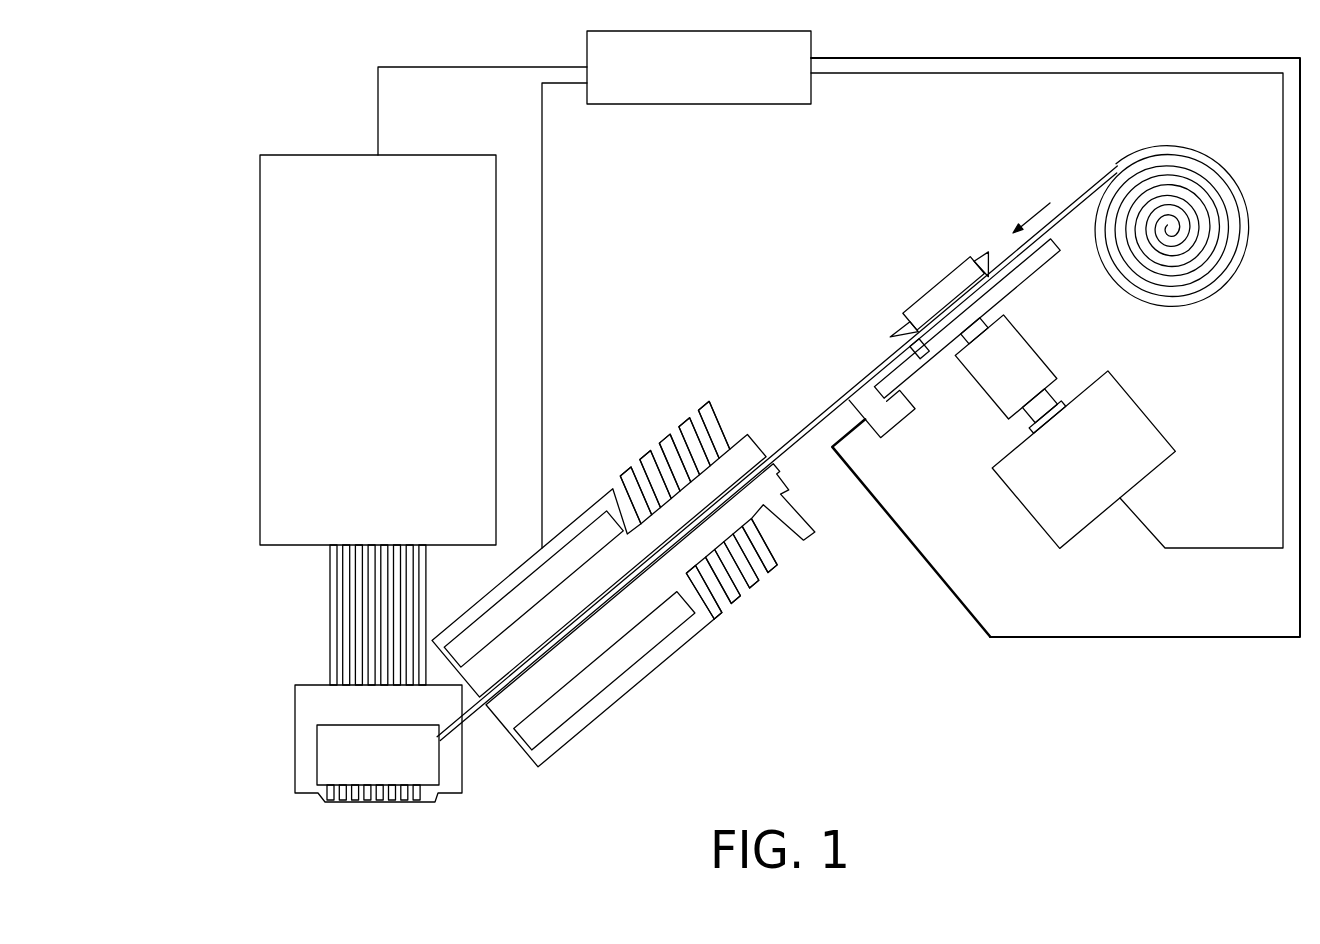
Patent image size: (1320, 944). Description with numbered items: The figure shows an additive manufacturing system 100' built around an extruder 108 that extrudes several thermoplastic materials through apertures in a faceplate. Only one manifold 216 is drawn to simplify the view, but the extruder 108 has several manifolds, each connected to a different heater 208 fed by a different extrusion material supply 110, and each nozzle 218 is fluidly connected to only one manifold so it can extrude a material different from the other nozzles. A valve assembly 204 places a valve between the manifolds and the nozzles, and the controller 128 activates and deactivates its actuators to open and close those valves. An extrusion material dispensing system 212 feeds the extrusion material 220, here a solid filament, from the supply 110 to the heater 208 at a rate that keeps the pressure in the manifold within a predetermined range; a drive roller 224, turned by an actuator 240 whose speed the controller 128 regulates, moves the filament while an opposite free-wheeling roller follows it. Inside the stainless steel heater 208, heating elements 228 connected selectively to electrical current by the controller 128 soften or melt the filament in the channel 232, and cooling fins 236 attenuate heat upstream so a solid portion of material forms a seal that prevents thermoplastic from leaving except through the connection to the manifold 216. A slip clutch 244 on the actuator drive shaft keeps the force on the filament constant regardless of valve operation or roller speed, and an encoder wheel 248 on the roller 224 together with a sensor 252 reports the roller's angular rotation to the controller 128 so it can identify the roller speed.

The additive manufacturing system 100' is at (149, 62).
The extruder 108 is at (290, 675).
The extrusion material supply 110 is at (1230, 167).
The controller 128 is at (697, 104).
The valve assembly 204 is at (325, 153).
The heater 208 is at (653, 572).
The extrusion material dispensing system 212 is at (997, 547).
The manifold 216 is at (440, 767).
The nozzle 218 is at (338, 806).
The extrusion material 220 is at (1067, 200).
The drive roller 224 is at (933, 285).
The heating elements 228 is at (582, 528).
The channel 232 is at (520, 677).
The cooling fins 236 is at (704, 402).
The actuator 240 is at (1147, 397).
The slip clutch 244 is at (1047, 362).
The encoder wheel 248 is at (927, 368).
The sensor 252 is at (882, 438).